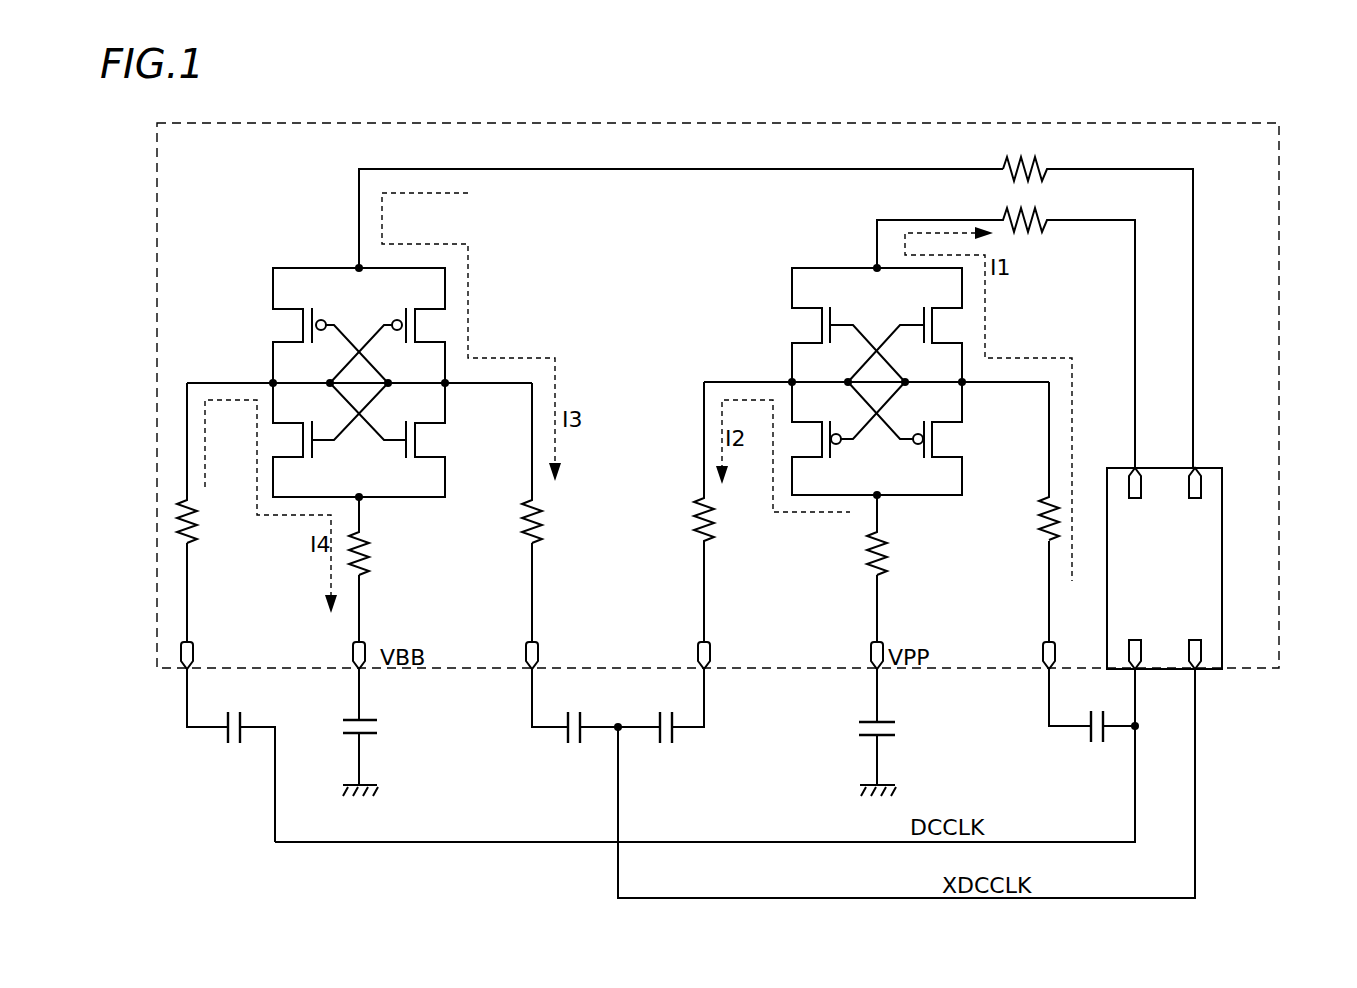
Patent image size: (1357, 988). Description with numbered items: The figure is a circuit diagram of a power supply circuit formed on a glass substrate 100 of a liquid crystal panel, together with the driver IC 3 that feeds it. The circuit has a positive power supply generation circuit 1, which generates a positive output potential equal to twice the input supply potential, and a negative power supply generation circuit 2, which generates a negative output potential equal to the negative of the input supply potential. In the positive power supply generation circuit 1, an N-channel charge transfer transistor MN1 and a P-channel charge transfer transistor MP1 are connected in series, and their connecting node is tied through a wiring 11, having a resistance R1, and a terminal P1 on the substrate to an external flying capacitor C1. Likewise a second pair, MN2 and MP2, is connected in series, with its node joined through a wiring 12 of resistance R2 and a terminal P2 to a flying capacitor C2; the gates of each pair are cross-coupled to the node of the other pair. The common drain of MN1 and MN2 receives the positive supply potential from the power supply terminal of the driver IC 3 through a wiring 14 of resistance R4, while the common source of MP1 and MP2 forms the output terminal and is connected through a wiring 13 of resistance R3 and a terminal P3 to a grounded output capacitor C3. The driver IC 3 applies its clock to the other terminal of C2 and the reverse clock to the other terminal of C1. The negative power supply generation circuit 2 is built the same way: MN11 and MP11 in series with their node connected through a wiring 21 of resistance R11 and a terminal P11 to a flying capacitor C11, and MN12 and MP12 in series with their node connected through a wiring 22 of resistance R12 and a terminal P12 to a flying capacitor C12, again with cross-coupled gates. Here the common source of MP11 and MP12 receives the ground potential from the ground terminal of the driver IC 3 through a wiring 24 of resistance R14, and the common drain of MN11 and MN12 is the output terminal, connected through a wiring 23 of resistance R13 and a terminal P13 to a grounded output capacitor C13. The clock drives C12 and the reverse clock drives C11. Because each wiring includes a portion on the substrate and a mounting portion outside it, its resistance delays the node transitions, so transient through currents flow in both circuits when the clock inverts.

The positive power supply generation circuit 1 is at (882, 347).
The negative power supply generation circuit 2 is at (366, 354).
The driver IC 3 is at (1222, 560).
The wiring 11 is at (704, 458).
The wiring 12 is at (1048, 580).
The wiring 13 is at (878, 604).
The wiring 14 is at (1135, 271).
The wiring 21 is at (533, 590).
The wiring 22 is at (188, 585).
The wiring 23 is at (360, 608).
The wiring 24 is at (585, 169).
The glass substrate 100 is at (1272, 374).
The N-channel type charge transfer transistor MN1 is at (791, 322).
The N-channel type charge transfer transistor MN2 is at (965, 322).
The P-channel type charge transfer transistor MP1 is at (812, 460).
The P-channel type charge transfer transistor MP2 is at (968, 440).
The N-channel type charge transfer transistor MN11 is at (453, 440).
The N-channel type charge transfer transistor MN12 is at (293, 460).
The P-channel type charge transfer transistor MP11 is at (448, 322).
The P-channel type charge transfer transistor MP12 is at (270, 322).
The resistance of wiring R1 is at (687, 511).
The resistance of wiring R2 is at (1032, 461).
The resistance of wiring R3 is at (893, 535).
The resistance of wiring R4 is at (1006, 333).
The resistance of wiring R11 is at (558, 463).
The resistance of wiring R12 is at (214, 463).
The resistance of wiring R13 is at (385, 536).
The resistance of wiring R14 is at (1098, 307).
The flying capacitor C1 is at (665, 752).
The flying capacitor C2 is at (1096, 752).
The output capacitor C3 is at (905, 729).
The flying capacitor C11 is at (570, 752).
The flying capacitor C12 is at (233, 752).
The output capacitor C13 is at (388, 729).
The terminal P1 is at (712, 665).
The terminal P2 is at (1043, 666).
The terminal P3 is at (868, 666).
The terminal P11 is at (521, 666).
The terminal P12 is at (178, 666).
The terminal P13 is at (351, 666).